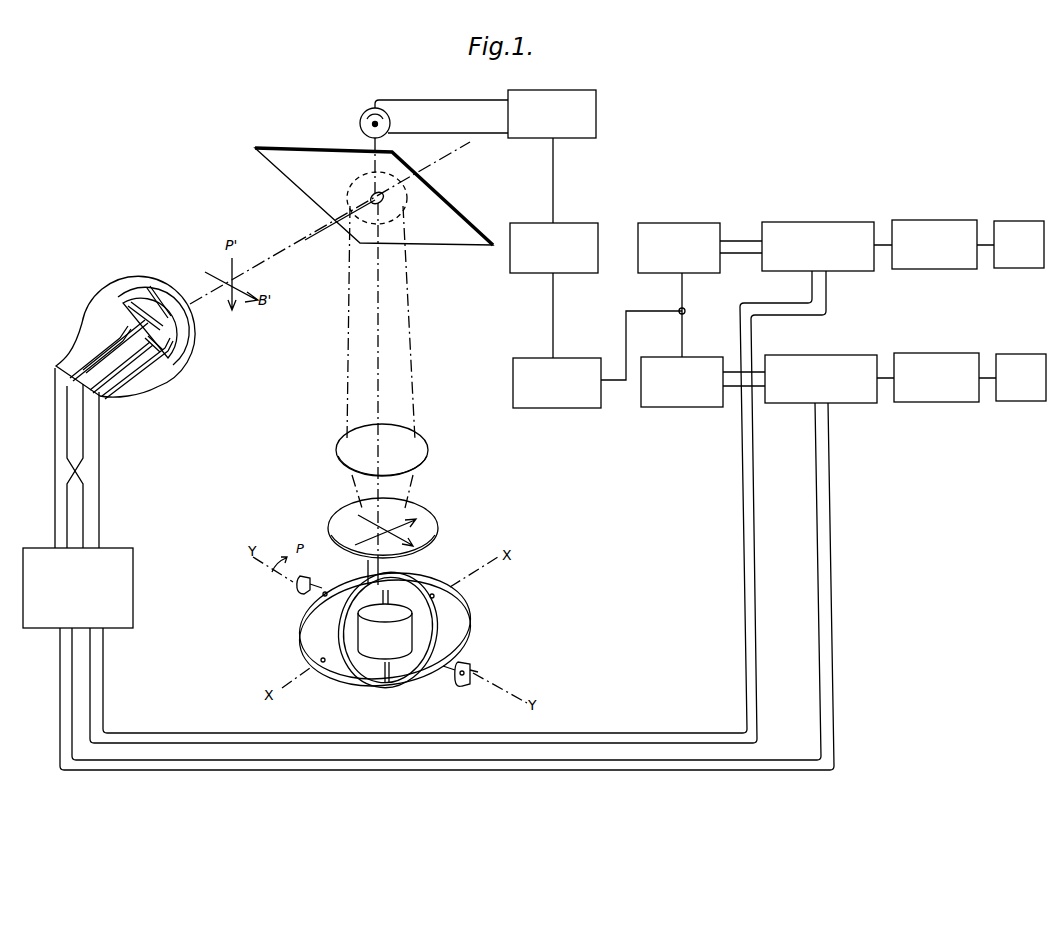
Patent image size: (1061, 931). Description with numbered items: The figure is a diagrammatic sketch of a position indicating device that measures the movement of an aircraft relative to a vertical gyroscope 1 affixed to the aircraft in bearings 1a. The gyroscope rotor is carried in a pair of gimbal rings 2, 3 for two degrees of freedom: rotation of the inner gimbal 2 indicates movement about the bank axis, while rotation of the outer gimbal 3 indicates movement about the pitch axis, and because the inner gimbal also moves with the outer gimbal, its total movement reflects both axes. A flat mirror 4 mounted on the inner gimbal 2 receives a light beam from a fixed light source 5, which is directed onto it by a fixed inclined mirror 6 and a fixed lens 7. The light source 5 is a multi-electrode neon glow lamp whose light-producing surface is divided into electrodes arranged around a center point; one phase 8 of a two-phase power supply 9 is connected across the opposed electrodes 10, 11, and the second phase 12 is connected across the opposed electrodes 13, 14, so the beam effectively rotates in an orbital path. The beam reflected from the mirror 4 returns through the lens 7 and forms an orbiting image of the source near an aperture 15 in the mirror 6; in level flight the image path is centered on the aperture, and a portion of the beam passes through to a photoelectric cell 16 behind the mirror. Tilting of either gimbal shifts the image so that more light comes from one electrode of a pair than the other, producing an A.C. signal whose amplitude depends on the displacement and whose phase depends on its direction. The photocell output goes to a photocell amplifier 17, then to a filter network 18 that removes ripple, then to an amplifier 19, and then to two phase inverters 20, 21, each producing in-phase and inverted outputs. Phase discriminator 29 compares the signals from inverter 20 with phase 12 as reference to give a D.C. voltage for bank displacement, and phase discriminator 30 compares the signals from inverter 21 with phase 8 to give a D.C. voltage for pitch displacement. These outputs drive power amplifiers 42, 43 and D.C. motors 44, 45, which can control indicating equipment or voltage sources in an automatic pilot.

The vertical gyroscope 1 is at (374, 592).
The bearings 1a is at (300, 592).
The inner gimbal 2 is at (342, 627).
The outer gimbal 3 is at (468, 598).
The mirror 4 is at (437, 517).
The light source 5 is at (147, 335).
The inclined mirror 6 is at (284, 170).
The lens 7 is at (428, 445).
The phase 8 is at (67, 508).
The two-phase power supply 9 is at (133, 575).
The electrode 10 is at (140, 298).
The electrode 11 is at (170, 372).
The phase 12 is at (83, 492).
The electrode 13 is at (118, 318).
The electrode 14 is at (182, 350).
The aperture 15 is at (380, 197).
The photoelectric cell 16 is at (361, 118).
The photocell amplifier 17 is at (596, 118).
The filter network 18 is at (578, 223).
The amplifier 19 is at (578, 358).
The phase inverter 20 is at (683, 223).
The phase inverter 21 is at (698, 357).
The phase discriminator 29 is at (843, 222).
The phase discriminator 30 is at (846, 355).
The power amplifier 42 is at (937, 220).
The power amplifier 43 is at (939, 353).
The D.C. motor 44 is at (1007, 221).
The D.C. motor 45 is at (1009, 354).